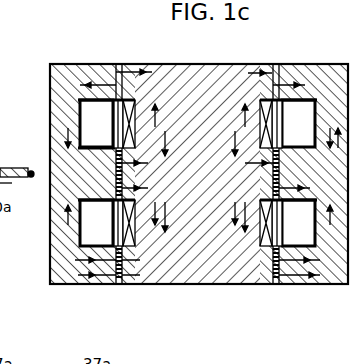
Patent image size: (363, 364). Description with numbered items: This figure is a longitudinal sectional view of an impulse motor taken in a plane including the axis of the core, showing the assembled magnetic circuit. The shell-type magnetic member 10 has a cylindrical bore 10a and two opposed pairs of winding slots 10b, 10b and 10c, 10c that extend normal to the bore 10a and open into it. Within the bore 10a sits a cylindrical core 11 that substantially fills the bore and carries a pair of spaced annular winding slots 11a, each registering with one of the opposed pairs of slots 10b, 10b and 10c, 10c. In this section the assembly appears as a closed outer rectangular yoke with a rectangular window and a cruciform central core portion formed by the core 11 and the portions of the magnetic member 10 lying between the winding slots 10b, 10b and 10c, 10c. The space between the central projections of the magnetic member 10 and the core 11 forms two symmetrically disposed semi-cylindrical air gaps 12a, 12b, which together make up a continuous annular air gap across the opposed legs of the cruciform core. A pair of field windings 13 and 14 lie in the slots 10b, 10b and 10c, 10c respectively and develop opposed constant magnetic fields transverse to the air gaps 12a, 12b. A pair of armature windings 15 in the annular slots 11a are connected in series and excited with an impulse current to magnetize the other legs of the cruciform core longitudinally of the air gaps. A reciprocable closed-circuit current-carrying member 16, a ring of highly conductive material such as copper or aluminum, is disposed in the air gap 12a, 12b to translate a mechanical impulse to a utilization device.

The shell-type magnetic member 10 is at (56, 250).
The cylindrical bore 10a is at (252, 73).
The winding slots 10b is at (118, 100).
The winding slots 10c is at (279, 100).
The cylindrical core 11 is at (208, 278).
The annular winding slots 11a is at (128, 100).
The semi-cylindrical air gap 12a is at (85, 201).
The semi-cylindrical air gap 12b is at (298, 223).
The field winding 13 is at (88, 118).
The field winding 14 is at (298, 123).
The armature windings 15 is at (262, 132).
The current-carrying member 16 is at (105, 150).